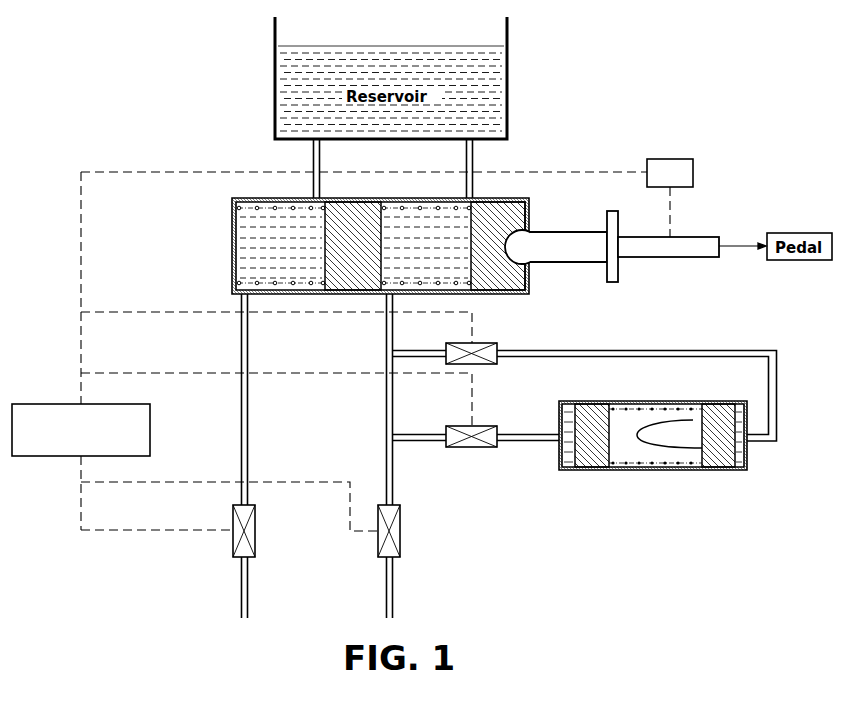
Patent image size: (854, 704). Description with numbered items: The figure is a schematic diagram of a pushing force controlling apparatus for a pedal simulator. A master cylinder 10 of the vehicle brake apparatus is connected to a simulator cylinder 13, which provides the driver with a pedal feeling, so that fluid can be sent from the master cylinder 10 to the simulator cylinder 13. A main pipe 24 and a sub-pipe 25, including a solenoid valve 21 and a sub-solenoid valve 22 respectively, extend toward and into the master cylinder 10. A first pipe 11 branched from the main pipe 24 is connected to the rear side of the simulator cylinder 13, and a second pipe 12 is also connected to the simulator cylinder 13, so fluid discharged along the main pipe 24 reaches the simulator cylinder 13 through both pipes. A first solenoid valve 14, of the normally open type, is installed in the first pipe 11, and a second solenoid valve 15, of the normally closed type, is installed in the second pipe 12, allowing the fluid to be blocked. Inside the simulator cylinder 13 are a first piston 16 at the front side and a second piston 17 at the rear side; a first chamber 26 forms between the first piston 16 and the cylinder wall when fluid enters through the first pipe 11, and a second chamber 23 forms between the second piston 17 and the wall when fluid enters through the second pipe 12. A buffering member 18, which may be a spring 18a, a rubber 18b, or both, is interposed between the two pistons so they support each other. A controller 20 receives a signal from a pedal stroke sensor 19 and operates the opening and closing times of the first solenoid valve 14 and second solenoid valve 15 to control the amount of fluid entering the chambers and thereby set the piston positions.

The master cylinder 10 is at (505, 197).
The first pipe 11 is at (622, 350).
The second pipe 12 is at (525, 442).
The simulator cylinder 13 is at (690, 470).
The first solenoid valve 14 is at (486, 343).
The second solenoid valve 15 is at (470, 448).
The first piston 16 is at (725, 460).
The second piston 17 is at (594, 460).
The buffering member 18 is at (654, 509).
The spring 18a is at (620, 467).
The rubber 18b is at (667, 447).
The pedal stroke sensor 19 is at (672, 158).
The controller 20 is at (52, 404).
The solenoid valve 21 is at (400, 538).
The sub-solenoid valve 22 is at (255, 538).
The second chamber 23 is at (568, 467).
The main pipe 24 is at (386, 587).
The sub-pipe 25 is at (241, 604).
The first chamber 26 is at (744, 452).